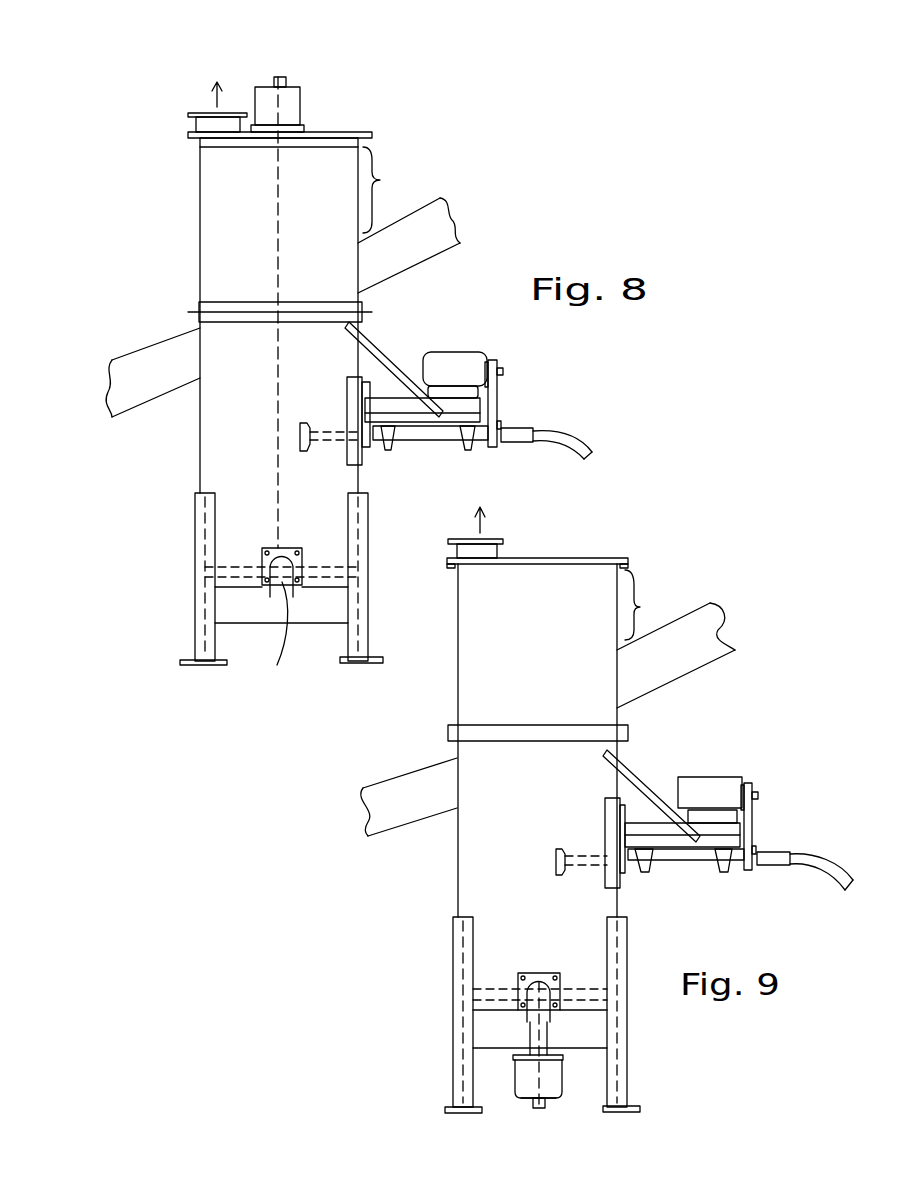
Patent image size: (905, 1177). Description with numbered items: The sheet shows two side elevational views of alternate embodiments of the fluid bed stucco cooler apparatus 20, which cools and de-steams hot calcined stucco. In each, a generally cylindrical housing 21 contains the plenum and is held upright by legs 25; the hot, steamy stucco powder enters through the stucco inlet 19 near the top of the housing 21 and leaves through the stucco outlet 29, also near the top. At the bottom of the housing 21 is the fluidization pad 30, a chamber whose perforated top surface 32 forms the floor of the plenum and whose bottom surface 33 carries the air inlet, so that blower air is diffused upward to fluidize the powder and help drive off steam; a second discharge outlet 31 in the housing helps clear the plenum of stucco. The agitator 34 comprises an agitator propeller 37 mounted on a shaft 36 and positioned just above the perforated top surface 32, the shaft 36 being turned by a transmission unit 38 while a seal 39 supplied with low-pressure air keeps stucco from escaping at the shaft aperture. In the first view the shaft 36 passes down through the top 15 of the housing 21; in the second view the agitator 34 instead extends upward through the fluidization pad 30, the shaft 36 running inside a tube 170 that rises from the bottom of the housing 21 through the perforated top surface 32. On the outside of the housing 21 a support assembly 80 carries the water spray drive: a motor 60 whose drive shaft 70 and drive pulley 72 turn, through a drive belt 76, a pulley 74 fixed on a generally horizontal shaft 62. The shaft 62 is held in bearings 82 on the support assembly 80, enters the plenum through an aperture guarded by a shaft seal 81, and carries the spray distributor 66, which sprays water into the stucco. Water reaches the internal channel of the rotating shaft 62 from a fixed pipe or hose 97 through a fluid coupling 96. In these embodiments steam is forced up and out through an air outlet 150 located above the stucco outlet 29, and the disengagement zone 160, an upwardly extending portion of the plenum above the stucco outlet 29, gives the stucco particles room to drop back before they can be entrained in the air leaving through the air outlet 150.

In FIG. 8, the top 15 is at (350, 132).
In FIG. 9, the top 15 is at (582, 558).
In FIG. 8, the stucco inlet 19 is at (440, 198).
In FIG. 9, the stucco inlet 19 is at (713, 657).
In FIG. 8, the fluid bed stucco cooler apparatus 20 is at (263, 246).
In FIG. 9, the fluid bed stucco cooler apparatus 20 is at (498, 703).
In FIG. 8, the housing 21 is at (210, 272).
In FIG. 9, the housing 21 is at (468, 836).
In FIG. 8, the legs 25 is at (200, 643).
In FIG. 9, the legs 25 is at (457, 1097).
In FIG. 8, the stucco outlet 29 is at (158, 392).
In FIG. 9, the stucco outlet 29 is at (400, 780).
In FIG. 8, the fluidization pad 30 is at (228, 603).
In FIG. 8, the second discharge outlet 31 is at (286, 632).
In FIG. 9, the second discharge outlet 31 is at (547, 995).
In FIG. 8, the perforated top surface 32 is at (343, 587).
In FIG. 8, the bottom surface 33 is at (313, 623).
In FIG. 8, the agitator 34 is at (313, 66).
In FIG. 9, the agitator 34 is at (511, 1116).
In FIG. 8, the shaft 36 is at (283, 474).
In FIG. 9, the shaft 36 is at (540, 1075).
In FIG. 8, the agitator propeller 37 is at (230, 570).
In FIG. 9, the agitator propeller 37 is at (483, 993).
In FIG. 8, the transmission unit 38 is at (262, 97).
In FIG. 9, the transmission unit 38 is at (558, 1097).
In FIG. 8, the seal 39 is at (298, 128).
In FIG. 9, the seal 39 is at (560, 1055).
In FIG. 8, the motor 60 is at (475, 353).
In FIG. 9, the motor 60 is at (725, 782).
In FIG. 8, the shaft 62 is at (437, 440).
In FIG. 9, the shaft 62 is at (752, 850).
In FIG. 8, the spray distributor 66 is at (283, 450).
In FIG. 9, the spray distributor 66 is at (553, 862).
In FIG. 8, the drive shaft 70 is at (503, 371).
In FIG. 9, the drive shaft 70 is at (758, 797).
In FIG. 8, the drive pulley 72 is at (497, 364).
In FIG. 9, the drive pulley 72 is at (752, 787).
In FIG. 8, the pulley 74 is at (499, 426).
In FIG. 9, the pulley 74 is at (748, 870).
In FIG. 8, the drive belt 76 is at (497, 398).
In FIG. 9, the drive belt 76 is at (752, 818).
In FIG. 8, the support assembly 80 is at (398, 402).
In FIG. 9, the support assembly 80 is at (650, 828).
In FIG. 8, the shaft seal 81 is at (372, 445).
In FIG. 9, the shaft seal 81 is at (624, 870).
In FIG. 8, the bearings 82 is at (388, 450).
In FIG. 9, the bearings 82 is at (728, 870).
In FIG. 8, the fluid coupling 96 is at (517, 442).
In FIG. 9, the fluid coupling 96 is at (777, 867).
In FIG. 8, the pipe or hose 97 is at (580, 443).
In FIG. 9, the pipe or hose 97 is at (822, 867).
In FIG. 8, the air outlet 150 is at (190, 115).
In FIG. 9, the air outlet 150 is at (490, 537).
In FIG. 8, the disengagement zone 160 is at (399, 190).
In FIG. 9, the disengagement zone 160 is at (655, 605).
In FIG. 9, the tube 170 is at (528, 1031).